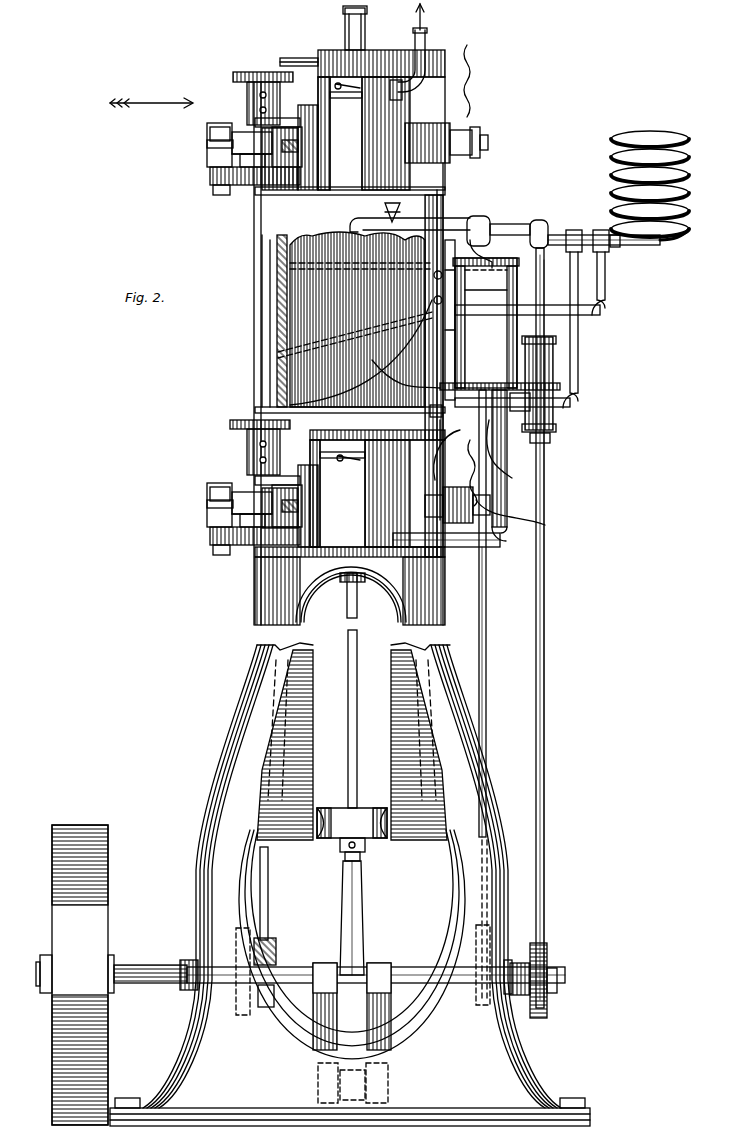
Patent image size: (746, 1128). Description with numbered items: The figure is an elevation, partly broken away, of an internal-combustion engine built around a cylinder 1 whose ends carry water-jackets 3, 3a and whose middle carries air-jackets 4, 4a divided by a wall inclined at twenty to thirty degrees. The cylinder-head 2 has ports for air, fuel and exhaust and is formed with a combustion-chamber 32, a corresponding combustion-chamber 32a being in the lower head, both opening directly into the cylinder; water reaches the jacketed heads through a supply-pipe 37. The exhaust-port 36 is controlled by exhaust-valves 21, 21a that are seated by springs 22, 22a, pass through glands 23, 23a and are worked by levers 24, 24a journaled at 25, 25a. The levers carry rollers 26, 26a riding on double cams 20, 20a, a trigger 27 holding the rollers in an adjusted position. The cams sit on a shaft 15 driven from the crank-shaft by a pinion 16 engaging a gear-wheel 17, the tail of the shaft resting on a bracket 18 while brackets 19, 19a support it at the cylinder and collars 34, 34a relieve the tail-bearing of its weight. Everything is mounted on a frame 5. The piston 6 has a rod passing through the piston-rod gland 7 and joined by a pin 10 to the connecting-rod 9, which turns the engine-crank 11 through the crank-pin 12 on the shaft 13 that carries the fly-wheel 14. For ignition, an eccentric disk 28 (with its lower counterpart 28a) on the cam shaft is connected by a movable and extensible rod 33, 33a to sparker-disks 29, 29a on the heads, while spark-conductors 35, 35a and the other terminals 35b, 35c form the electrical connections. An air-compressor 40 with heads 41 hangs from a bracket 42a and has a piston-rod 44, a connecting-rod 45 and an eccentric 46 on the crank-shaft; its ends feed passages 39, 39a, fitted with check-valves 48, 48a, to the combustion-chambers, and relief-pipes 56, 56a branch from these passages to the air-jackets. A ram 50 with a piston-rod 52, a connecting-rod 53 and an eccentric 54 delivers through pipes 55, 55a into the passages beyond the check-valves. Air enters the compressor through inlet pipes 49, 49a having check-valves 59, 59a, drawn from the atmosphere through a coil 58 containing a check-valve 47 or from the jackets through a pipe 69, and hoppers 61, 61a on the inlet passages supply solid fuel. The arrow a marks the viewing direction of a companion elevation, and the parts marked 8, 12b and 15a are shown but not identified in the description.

The cylinder 1 is at (300, 221).
The cylinder-head 2 is at (440, 176).
The water-jacket 3 is at (280, 258).
The water-jacket 3a is at (283, 404).
The air-jacket 4 is at (283, 323).
The air-jacket 4a is at (283, 375).
The frame 5 is at (208, 872).
The piston 6 is at (352, 735).
The piston-rod gland 7 is at (346, 586).
The crosshead 8 is at (330, 834).
The connecting-rod 9 is at (360, 925).
The pin 10 is at (364, 848).
The engine-crank 11 is at (320, 1010).
The crank-pin 12 is at (450, 487).
The crank pit 12b is at (336, 1087).
The shaft 13 is at (438, 968).
The fly-wheel 14 is at (117, 975).
The shaft 15 is at (270, 894).
The cylinder base 15a is at (258, 596).
The pinion 16 is at (272, 956).
The gear-wheel 17 is at (245, 1016).
The bracket 18 is at (272, 1008).
The bracket 19 is at (226, 176).
The bracket 19a is at (213, 537).
The double cam 20 is at (270, 130).
The double cam 20a is at (270, 496).
The exhaust-valve 21 is at (299, 125).
The exhaust-valve 21a is at (293, 494).
The spring 22 is at (292, 153).
The spring 22a is at (290, 497).
The gland 23 is at (297, 134).
The gland 23a is at (302, 497).
The lever 24 is at (212, 126).
The lever 24a is at (210, 502).
The journal 25 is at (215, 194).
The journal 25a is at (222, 556).
The roller 26 is at (268, 136).
The roller 26a is at (258, 497).
The trigger 27 is at (210, 139).
The eccentric disk 28 is at (264, 74).
The eccentric disk 28a is at (245, 417).
The sparker-disk 29 is at (398, 88).
The sparker-disk 29a is at (441, 437).
The combustion-chamber 32 is at (381, 133).
The combustion-chamber 32a is at (377, 493).
The movable and extensible rod 33 is at (332, 58).
The movable and extensible rod 33a is at (371, 437).
The collar 34 is at (255, 96).
The collar 34a is at (252, 450).
The spark-conductor 35 is at (342, 90).
The spark-conductor 35a is at (343, 462).
The spark terminal 35b is at (481, 81).
The spark terminal 35c is at (545, 525).
The exhaust-port 36 is at (353, 25).
The supply-pipe 37 is at (426, 46).
The inlet-passage 39 is at (356, 203).
The inlet-passage 39a is at (468, 550).
The air-compressor 40 is at (486, 299).
The head 41 is at (500, 324).
The bracket 42a is at (441, 411).
The piston-rod 44 is at (488, 608).
The connecting-rod 45 is at (483, 755).
The eccentric 46 is at (478, 993).
The check-valve 47 is at (612, 247).
The check-valve 48 is at (525, 232).
The check-valve 48a is at (512, 457).
The inlet pipe 49 is at (604, 233).
The inlet pipe 49a is at (579, 340).
The ram 50 is at (553, 352).
The piston-rod 52 is at (546, 570).
The connecting-rod 53 is at (545, 805).
The eccentric 54 is at (549, 997).
The pipe 55 is at (510, 222).
The pipe 55a is at (535, 443).
The relief-pipe 56 is at (434, 277).
The relief-pipe 56a is at (365, 352).
The coil 58 is at (678, 186).
The check-valve 59 is at (549, 227).
The check-valve 59a is at (540, 406).
The hopper 61 is at (452, 213).
The hopper 61a is at (461, 472).
The pipe 69 is at (556, 305).
The arrow a is at (151, 98).